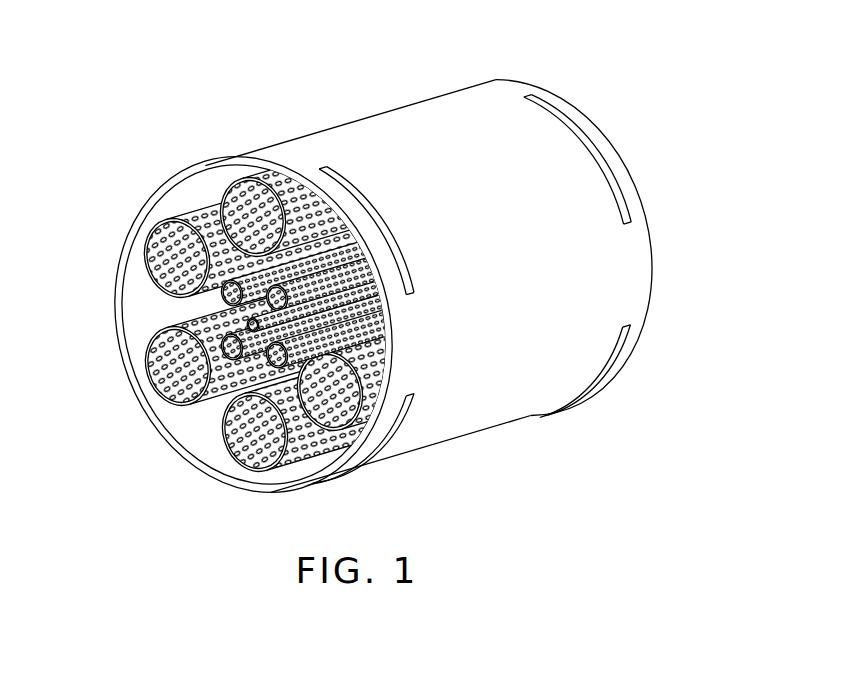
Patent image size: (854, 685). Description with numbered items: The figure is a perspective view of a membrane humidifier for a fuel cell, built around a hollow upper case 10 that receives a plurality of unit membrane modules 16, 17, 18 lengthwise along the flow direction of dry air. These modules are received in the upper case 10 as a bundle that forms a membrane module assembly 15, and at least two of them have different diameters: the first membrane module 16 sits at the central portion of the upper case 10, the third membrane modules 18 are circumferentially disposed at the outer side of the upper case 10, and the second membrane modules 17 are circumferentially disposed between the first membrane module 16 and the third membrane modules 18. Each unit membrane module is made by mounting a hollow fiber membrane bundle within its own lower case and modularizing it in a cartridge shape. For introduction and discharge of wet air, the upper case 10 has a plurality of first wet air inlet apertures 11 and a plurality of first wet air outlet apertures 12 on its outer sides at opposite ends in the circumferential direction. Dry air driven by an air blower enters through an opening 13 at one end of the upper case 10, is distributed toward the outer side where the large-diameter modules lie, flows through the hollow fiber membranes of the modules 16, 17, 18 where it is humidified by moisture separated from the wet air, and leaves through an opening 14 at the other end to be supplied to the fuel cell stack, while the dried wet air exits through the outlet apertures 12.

The upper case 10 is at (376, 105).
The first wet air inlet apertures 11 is at (328, 170).
The first wet air outlet apertures 12 is at (557, 123).
The opening 13 is at (593, 123).
The opening 14 is at (190, 165).
The membrane module assembly 15 is at (171, 312).
The first membrane module 16 is at (190, 340).
The second membrane modules 17 is at (190, 307).
The third membrane modules 18 is at (147, 349).